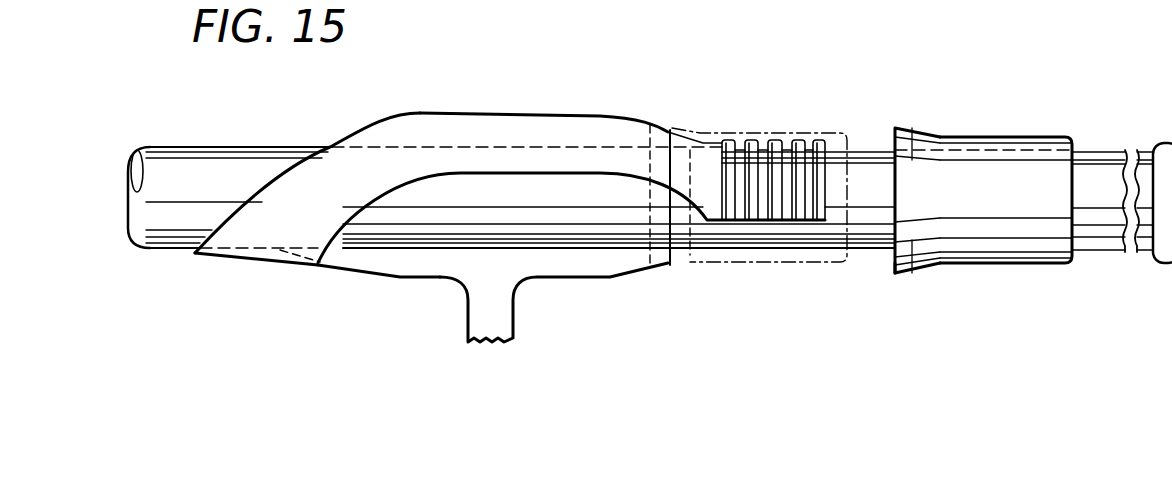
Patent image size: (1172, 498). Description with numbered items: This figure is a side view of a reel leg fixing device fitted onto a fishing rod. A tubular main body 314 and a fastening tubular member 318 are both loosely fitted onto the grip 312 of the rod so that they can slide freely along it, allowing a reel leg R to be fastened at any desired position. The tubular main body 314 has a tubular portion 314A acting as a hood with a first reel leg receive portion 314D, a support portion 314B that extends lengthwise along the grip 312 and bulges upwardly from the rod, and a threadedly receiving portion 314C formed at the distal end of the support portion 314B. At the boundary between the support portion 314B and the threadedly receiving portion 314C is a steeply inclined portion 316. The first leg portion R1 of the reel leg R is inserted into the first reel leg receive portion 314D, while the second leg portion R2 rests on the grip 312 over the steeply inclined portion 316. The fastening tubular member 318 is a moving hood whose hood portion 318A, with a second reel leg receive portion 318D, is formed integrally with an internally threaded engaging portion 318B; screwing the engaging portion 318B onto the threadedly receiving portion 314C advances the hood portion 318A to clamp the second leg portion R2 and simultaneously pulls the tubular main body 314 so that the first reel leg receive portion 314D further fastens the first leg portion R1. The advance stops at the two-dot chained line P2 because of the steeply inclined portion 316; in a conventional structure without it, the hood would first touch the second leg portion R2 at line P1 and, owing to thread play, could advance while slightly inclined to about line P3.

The grip 312 is at (178, 180).
The tubular main body 314 is at (510, 219).
The tubular portion 314A is at (285, 198).
The support portion 314B is at (433, 130).
The threadedly receiving portion 314C is at (765, 155).
The first reel leg receive portion 314D is at (327, 267).
The steeply inclined portion 316 is at (667, 130).
The fastening tubular member 318 is at (951, 202).
The hood portion 318A is at (910, 143).
The threadedly engaging portion 318B is at (1038, 143).
The second reel leg receive portion 318D is at (895, 262).
The reel leg R is at (477, 322).
The first leg portion R1 is at (360, 262).
The second leg portion R2 is at (660, 257).
The position P1 is at (692, 175).
The position P2 is at (697, 225).
The position P3 is at (645, 198).